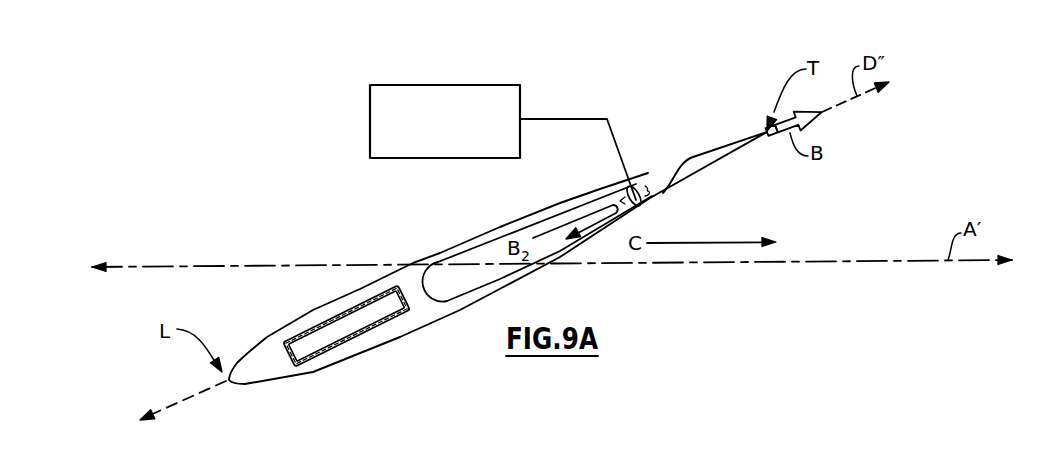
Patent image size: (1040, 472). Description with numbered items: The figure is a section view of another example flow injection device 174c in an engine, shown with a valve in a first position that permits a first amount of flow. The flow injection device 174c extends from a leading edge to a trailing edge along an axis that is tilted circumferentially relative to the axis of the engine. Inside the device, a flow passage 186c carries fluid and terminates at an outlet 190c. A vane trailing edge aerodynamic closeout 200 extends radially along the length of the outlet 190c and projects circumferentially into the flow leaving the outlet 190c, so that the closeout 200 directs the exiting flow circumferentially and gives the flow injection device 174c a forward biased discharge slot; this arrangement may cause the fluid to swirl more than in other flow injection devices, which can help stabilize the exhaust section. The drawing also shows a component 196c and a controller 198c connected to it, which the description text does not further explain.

The flow injection device 174c is at (373, 282).
The flow passage 186c is at (588, 195).
The outlet 190c is at (665, 175).
The actuator 196c is at (647, 198).
The controller 198c is at (472, 148).
The vane trailing edge aerodynamic closeout 200 is at (705, 153).